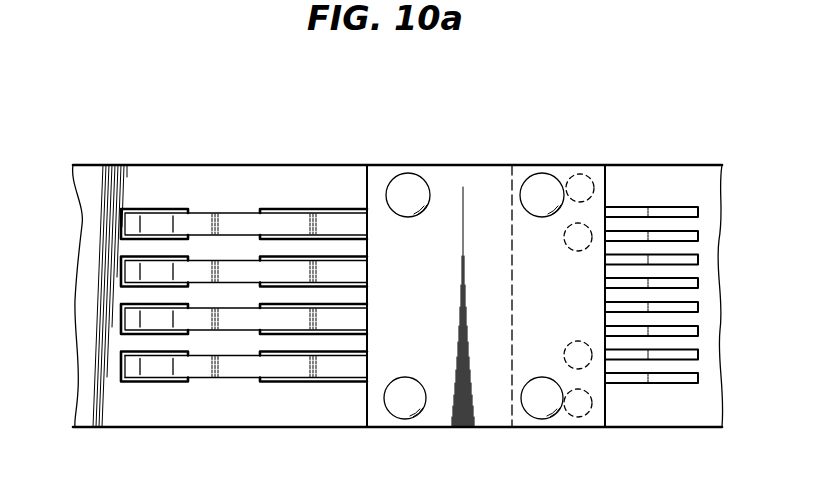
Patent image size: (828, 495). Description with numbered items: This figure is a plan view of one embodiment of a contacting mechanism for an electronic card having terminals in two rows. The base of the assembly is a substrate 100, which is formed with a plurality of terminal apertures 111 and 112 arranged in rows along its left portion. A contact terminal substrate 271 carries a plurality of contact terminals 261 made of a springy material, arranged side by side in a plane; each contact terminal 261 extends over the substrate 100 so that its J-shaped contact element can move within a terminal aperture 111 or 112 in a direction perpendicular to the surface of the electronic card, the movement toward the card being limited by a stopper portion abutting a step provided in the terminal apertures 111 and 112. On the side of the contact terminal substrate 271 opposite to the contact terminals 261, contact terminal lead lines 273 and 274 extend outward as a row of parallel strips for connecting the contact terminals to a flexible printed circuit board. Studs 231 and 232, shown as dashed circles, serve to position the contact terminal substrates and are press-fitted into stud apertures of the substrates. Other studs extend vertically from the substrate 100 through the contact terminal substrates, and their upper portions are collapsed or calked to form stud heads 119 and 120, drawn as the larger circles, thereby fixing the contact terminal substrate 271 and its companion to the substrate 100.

The substrate 100 is at (343, 410).
The terminal aperture 111 is at (150, 374).
The contact terminal 261 is at (197, 372).
The terminal aperture 112 is at (280, 374).
The stud head 119 is at (408, 185).
The contact terminal substrate 271 is at (463, 166).
The stud head 120 is at (540, 185).
The stud 231 is at (580, 175).
The stud 232 is at (590, 227).
The contact terminal lead line 273 is at (698, 354).
The contact terminal lead line 274 is at (698, 378).